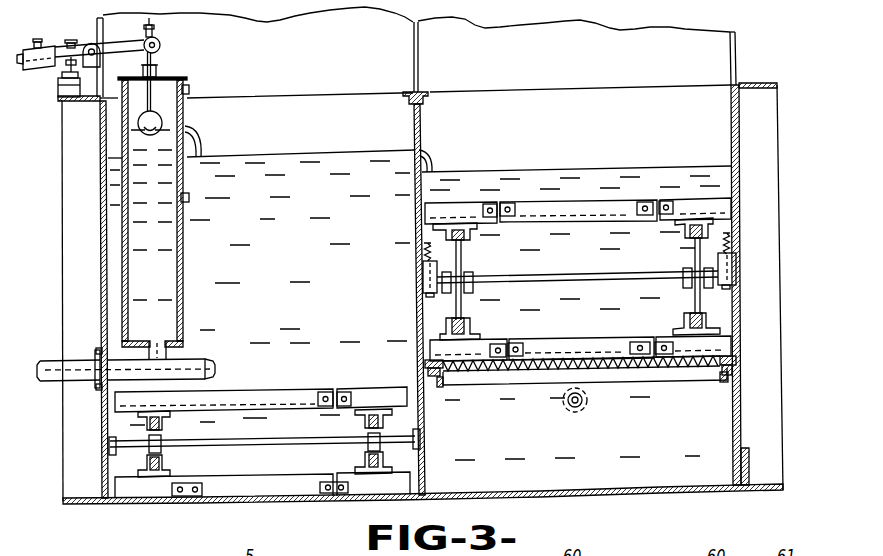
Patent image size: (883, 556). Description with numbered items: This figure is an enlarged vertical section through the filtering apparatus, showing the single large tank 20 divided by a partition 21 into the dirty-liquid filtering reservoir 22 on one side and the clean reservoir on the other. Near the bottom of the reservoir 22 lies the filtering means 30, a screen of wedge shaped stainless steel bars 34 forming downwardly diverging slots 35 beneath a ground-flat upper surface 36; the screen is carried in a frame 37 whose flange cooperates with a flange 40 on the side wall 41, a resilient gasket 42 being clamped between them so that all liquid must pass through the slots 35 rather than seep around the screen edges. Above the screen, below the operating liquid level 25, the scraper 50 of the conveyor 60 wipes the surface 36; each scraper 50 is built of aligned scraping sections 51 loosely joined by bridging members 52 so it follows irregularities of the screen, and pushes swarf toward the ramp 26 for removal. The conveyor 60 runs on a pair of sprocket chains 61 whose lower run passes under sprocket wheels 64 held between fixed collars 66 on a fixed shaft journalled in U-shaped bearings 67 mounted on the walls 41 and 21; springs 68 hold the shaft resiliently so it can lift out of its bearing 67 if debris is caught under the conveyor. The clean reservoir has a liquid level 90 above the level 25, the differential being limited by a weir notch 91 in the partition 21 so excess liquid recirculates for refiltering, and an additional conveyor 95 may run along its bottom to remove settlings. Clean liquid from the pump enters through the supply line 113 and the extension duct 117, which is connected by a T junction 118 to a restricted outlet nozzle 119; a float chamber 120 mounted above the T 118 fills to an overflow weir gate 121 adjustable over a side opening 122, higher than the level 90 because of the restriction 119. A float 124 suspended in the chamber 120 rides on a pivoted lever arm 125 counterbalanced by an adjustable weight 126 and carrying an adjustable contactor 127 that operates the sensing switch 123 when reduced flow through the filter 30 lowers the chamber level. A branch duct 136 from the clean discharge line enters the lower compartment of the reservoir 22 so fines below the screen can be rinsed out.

The tank 20 is at (580, 497).
The partition 21 is at (421, 98).
The reservoir 22 is at (570, 196).
The operating liquid level 25 is at (602, 172).
The ramp 26 is at (592, 130).
The filtering means 30 is at (658, 381).
The wedge shaped stainless steel bars 34 is at (515, 372).
The wedge shaped slots 35 is at (610, 368).
The upper surface 36 is at (585, 365).
The frame 37 is at (446, 385).
The flange 40 is at (426, 371).
The side wall 41 is at (740, 403).
The resilient gasket 42 is at (425, 362).
The scraper 50 is at (557, 342).
The scraping section 51 is at (493, 347).
The bridging member 52 is at (514, 352).
The conveyor 60 is at (475, 331).
The sprocket chain 61 is at (466, 321).
The sprocket wheel 64 is at (462, 258).
The fixed collar 66 is at (472, 280).
The U-shaped bearing 67 is at (422, 278).
The spring 68 is at (422, 249).
The liquid level 90 is at (322, 132).
The weir notch 91 is at (422, 151).
The additional conveyor 95 is at (284, 392).
The supply pipe 113 is at (88, 344).
The extension duct 117 is at (106, 388).
The T junction 118 is at (168, 362).
The restricted outlet nozzle 119 is at (215, 367).
The float chamber 120 is at (184, 232).
The overflow weir gate 121 is at (186, 128).
The opening 122 is at (176, 152).
The sensing switch 123 is at (58, 85).
The float 124 is at (160, 113).
The pivoted lever arm 125 is at (136, 36).
The adjustable weight 126 is at (50, 27).
The adjustable contactor 127 is at (85, 28).
The branch duct 136 is at (581, 409).